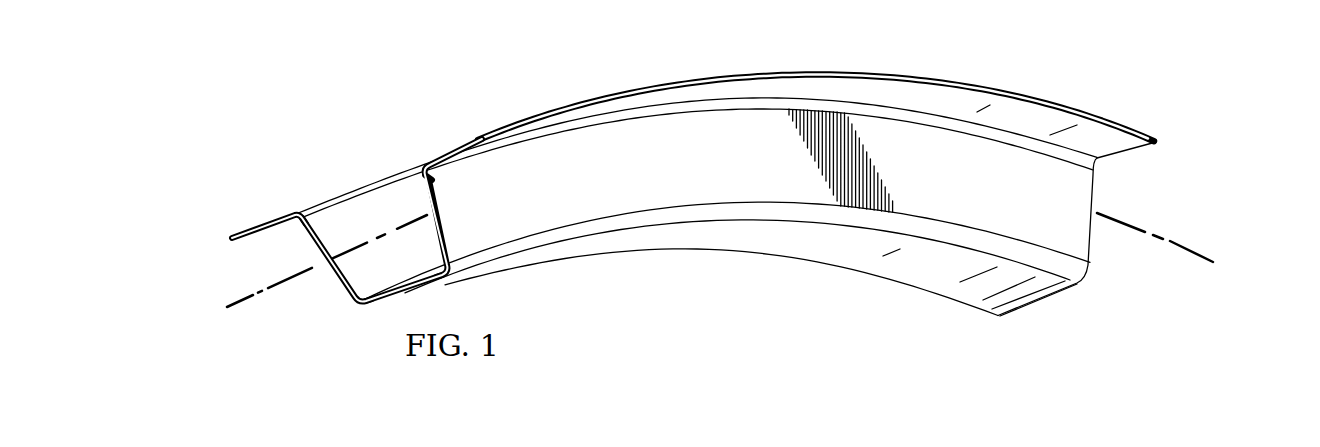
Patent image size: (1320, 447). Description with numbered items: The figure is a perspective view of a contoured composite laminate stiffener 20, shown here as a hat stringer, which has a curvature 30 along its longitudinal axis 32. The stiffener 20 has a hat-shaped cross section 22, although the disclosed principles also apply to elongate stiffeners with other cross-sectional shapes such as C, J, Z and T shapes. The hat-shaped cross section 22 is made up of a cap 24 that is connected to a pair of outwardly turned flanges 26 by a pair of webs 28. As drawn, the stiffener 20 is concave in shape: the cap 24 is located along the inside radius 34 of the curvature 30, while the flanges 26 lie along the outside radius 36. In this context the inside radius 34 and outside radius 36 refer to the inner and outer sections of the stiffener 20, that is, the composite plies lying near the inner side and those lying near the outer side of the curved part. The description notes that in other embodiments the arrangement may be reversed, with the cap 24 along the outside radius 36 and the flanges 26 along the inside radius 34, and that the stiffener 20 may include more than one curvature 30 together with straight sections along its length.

The contoured composite laminate stiffener 20 is at (726, 224).
The hat-shaped cross section 22 is at (358, 207).
The cap 24 is at (1040, 301).
The outwardly turned flanges 26 is at (253, 227).
The webs 28 is at (342, 289).
The curvature 30 is at (587, 276).
The longitudinal axis 32 is at (1190, 246).
The inside radius 34 is at (844, 290).
The outside radius 36 is at (559, 93).